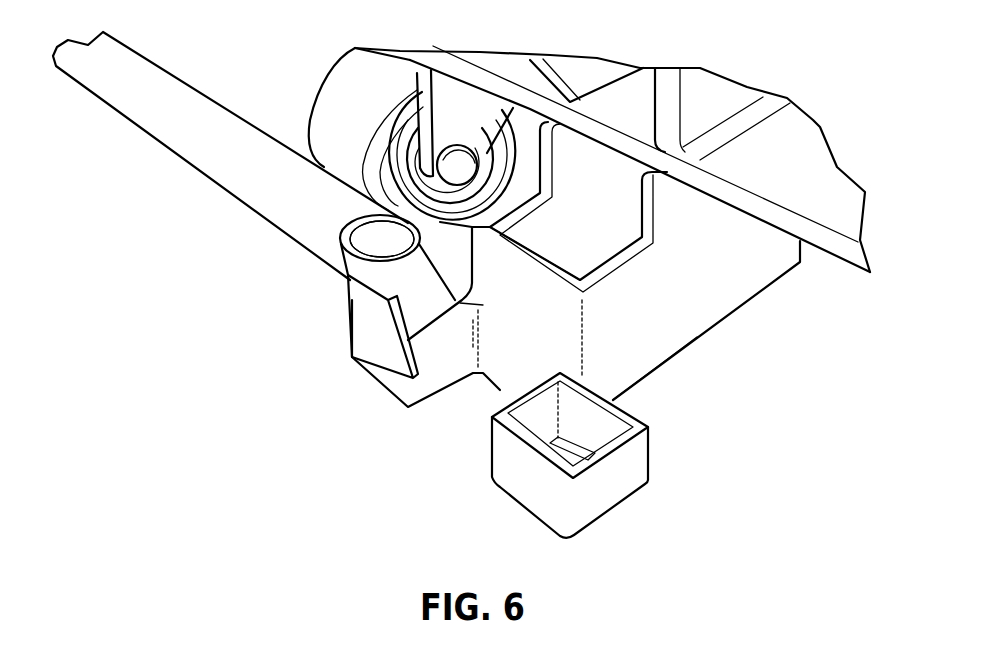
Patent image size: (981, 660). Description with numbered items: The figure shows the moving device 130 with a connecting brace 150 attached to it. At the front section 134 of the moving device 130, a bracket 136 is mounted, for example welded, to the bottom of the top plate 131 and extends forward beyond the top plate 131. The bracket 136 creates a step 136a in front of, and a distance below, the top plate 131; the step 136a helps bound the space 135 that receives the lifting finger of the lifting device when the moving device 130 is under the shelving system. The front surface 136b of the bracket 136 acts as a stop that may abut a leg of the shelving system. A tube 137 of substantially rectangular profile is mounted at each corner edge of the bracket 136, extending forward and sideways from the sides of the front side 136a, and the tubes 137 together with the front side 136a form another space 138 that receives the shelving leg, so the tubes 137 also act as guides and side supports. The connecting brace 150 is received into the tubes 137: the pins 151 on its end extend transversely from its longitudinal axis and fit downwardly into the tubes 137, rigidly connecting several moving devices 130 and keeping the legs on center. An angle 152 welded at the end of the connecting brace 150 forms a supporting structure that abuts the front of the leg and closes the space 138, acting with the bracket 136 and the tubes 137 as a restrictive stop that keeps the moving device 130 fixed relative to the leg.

The moving device 130 is at (400, 53).
The top plate 131 is at (854, 254).
The front section 134 is at (763, 435).
The space 135 is at (613, 215).
The bracket 136 is at (657, 322).
The step 136a is at (643, 242).
The front surface 136b is at (533, 322).
The tube 137 is at (373, 368).
The space 138 is at (463, 413).
The connecting brace 150 is at (237, 187).
The pin 151 is at (388, 228).
The angle 152 is at (367, 323).